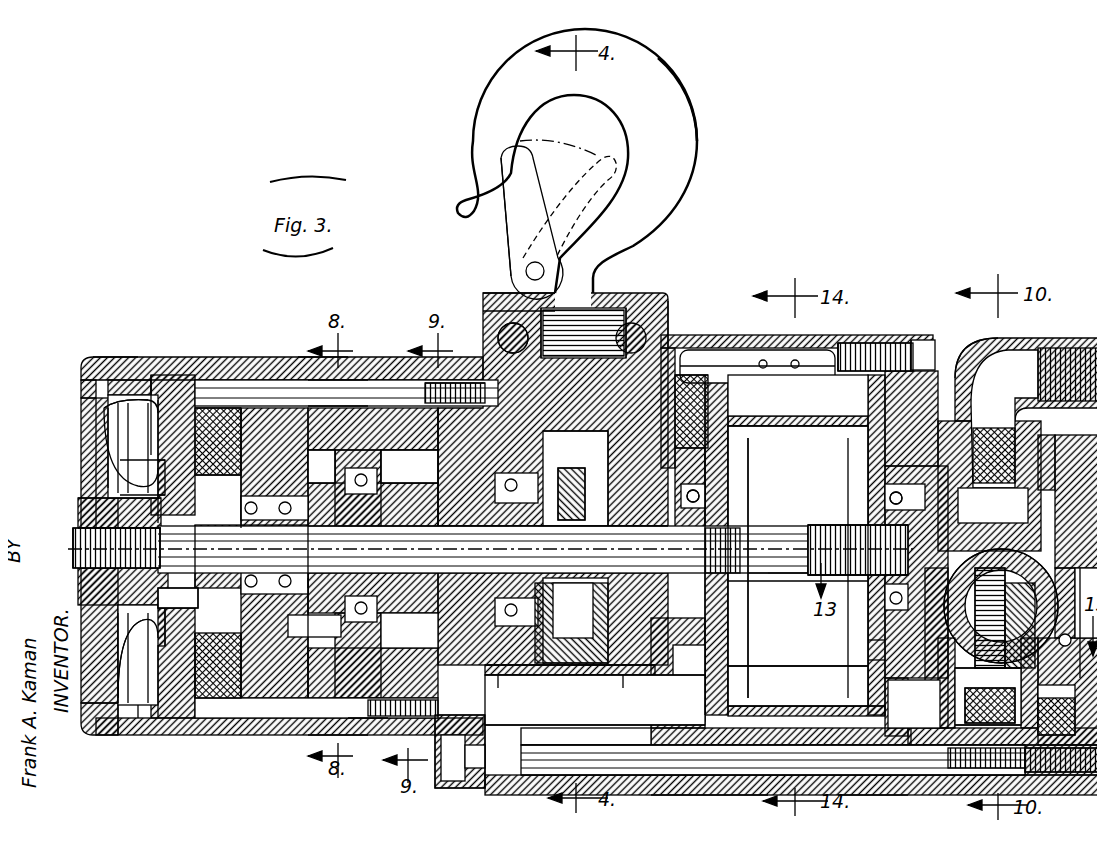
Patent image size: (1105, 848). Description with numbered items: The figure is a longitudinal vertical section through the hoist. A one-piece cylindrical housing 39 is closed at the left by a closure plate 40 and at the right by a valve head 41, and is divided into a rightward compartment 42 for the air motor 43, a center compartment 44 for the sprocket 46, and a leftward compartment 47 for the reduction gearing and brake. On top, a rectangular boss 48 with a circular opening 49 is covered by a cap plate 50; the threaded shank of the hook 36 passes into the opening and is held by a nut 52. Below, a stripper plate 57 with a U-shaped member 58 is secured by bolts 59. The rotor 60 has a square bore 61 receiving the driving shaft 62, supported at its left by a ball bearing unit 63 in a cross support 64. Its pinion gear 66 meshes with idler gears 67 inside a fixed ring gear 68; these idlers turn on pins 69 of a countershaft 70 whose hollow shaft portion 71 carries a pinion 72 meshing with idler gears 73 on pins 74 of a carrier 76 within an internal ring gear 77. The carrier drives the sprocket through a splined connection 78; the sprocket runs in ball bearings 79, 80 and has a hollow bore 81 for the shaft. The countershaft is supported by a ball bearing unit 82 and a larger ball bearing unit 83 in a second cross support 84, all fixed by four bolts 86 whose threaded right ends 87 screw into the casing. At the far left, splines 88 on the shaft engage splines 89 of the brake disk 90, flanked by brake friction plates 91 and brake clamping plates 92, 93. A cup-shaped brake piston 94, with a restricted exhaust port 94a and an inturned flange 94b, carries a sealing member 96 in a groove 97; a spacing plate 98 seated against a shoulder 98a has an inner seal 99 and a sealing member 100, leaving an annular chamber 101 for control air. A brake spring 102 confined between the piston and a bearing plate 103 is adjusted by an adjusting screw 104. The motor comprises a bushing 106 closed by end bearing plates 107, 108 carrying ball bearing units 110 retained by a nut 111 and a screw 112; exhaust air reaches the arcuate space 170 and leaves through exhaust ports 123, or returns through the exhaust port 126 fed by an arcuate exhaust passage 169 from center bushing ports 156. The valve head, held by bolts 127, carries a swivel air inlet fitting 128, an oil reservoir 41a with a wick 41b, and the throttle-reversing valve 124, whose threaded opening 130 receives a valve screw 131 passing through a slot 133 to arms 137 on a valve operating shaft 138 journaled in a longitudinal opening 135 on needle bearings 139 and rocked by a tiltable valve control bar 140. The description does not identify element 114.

The hook 36 is at (660, 95).
The nut 52 is at (600, 290).
The cap plate 50 is at (480, 286).
The right ends of the bolts 87 is at (476, 320).
The circular opening 49 is at (630, 300).
The rectangular boss 48 is at (660, 298).
The housing 39 is at (680, 327).
The rightward compartment 42 is at (720, 335).
The exhaust ports 123 is at (790, 330).
The valve head 41 is at (880, 333).
The bolts 127 is at (926, 345).
The swivel air inlet fitting 128 is at (990, 345).
The closure plate 40 is at (78, 351).
The brake piston 94 is at (120, 400).
The spacing plate 98 is at (95, 420).
The annular space or chamber 101 is at (150, 400).
The brake spring 102 is at (130, 455).
The bearing plate 103 is at (125, 472).
The inturned flange 94b is at (110, 496).
The adjusting screw 104 is at (100, 516).
The splines 89 is at (68, 533).
The splines 88 is at (66, 551).
The brake disk 90 is at (200, 370).
The brake friction plates 91 is at (185, 372).
The idler gears 67 is at (275, 370).
The leftward compartment 47 is at (300, 349).
The ring gear 68 is at (350, 372).
The bolts 86 is at (366, 372).
The idler gears 73 is at (390, 372).
The internal ring gear 77 is at (489, 342).
The pins 69 is at (320, 455).
The pins 74 is at (409, 466).
The carrier or spider 76 is at (476, 460).
The center compartment 44 is at (565, 467).
The sprocket 46 is at (575, 470).
The ball bearing unit 63 is at (232, 556).
The ball bearing unit 82 is at (294, 556).
The pinion gear 66 is at (323, 544).
The countershaft or spider 70 is at (363, 544).
The hollow shaft portion 71 is at (408, 544).
The pinion 72 is at (448, 544).
The splined connection 78 is at (488, 544).
The ball bearing 79 is at (523, 544).
The hollow bore 81 is at (558, 544).
The driving shaft 62 is at (598, 542).
The ball bearing 80 is at (643, 542).
The bushing or stator 106 is at (757, 545).
The end bearing plate 107 is at (723, 450).
The end bearing plate 108 is at (865, 450).
The nut 111 is at (722, 472).
The air motor 43 is at (798, 458).
The ball bearing units 110 is at (702, 490).
The rotor 60 is at (762, 566).
The square bore 61 is at (761, 596).
The screw 112 is at (858, 560).
The arcuate exhaust passage 169 is at (858, 598).
The valve screw 131 is at (860, 632).
The threaded opening 130 is at (860, 652).
The motor base 114 is at (798, 679).
The exhaust port 126 is at (863, 672).
The center bushing ports 156 is at (950, 578).
The throttle-reversing valve 124 is at (1020, 568).
The slot 133 is at (946, 670).
The wick 41b is at (950, 692).
The arms 137 is at (942, 716).
The inner seal 99 is at (169, 596).
The bolts 59 is at (495, 680).
The U-shaped member 58 is at (522, 668).
The valve control bar 140 is at (595, 713).
The stripper plate 57 is at (612, 690).
The exhaust port 94a is at (105, 700).
The sealing member 96 is at (112, 727).
The groove 97 is at (130, 727).
The shoulder 98a is at (160, 727).
The sealing member 100 is at (155, 727).
The brake clamping plate 92 is at (190, 727).
The brake clamping plate 93 is at (210, 727).
The cross support 64 is at (255, 727).
The ball bearing unit 83 is at (352, 727).
The cross support 84 is at (338, 766).
The needle bearings 139 is at (455, 781).
The longitudinal opening 135 is at (700, 787).
The arcuate space 170 is at (878, 787).
The oil reservoir 41a is at (1061, 783).
The valve operating shaft 138 is at (773, 760).